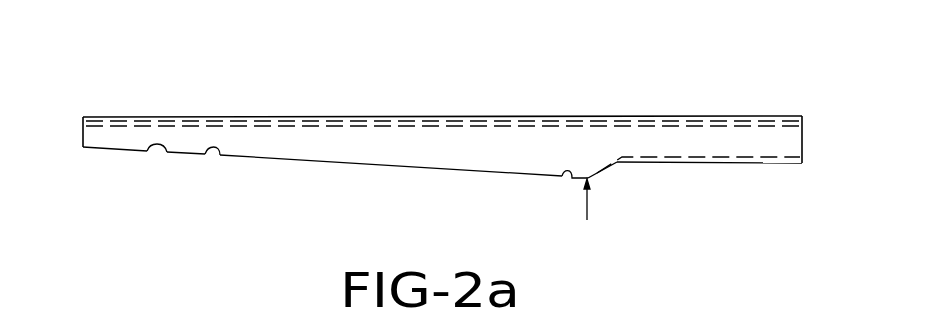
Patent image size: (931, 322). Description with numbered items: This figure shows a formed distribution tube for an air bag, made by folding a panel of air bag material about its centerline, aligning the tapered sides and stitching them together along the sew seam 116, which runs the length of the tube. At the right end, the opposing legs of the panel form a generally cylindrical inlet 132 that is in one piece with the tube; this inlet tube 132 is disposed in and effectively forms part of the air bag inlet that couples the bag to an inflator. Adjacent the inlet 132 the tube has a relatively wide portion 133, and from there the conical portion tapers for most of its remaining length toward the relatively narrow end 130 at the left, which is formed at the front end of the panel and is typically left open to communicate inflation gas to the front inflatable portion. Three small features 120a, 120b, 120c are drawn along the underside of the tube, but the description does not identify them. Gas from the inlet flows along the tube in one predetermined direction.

The sew seam 116 is at (295, 122).
The relatively narrow end 130 is at (87, 137).
The inlet 132 is at (792, 145).
The relatively wide portion 133 is at (587, 115).
The first detent bump 120a is at (157, 144).
The second detent bump 120b is at (212, 146).
The third detent bump 120c is at (567, 171).